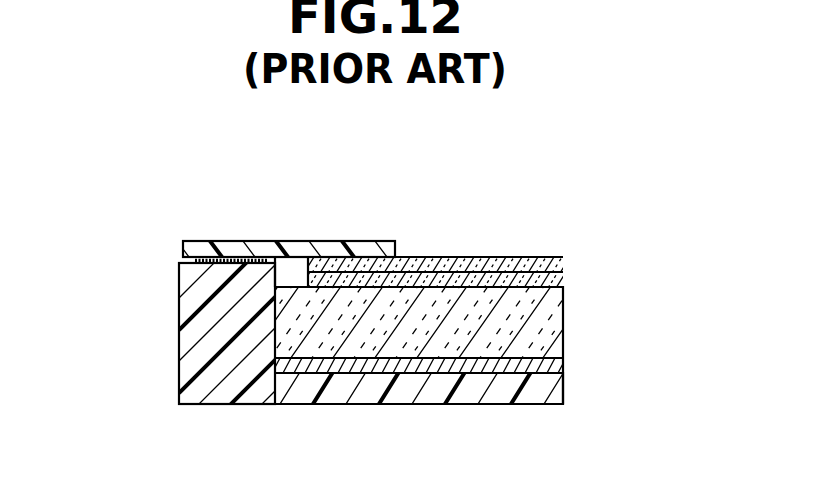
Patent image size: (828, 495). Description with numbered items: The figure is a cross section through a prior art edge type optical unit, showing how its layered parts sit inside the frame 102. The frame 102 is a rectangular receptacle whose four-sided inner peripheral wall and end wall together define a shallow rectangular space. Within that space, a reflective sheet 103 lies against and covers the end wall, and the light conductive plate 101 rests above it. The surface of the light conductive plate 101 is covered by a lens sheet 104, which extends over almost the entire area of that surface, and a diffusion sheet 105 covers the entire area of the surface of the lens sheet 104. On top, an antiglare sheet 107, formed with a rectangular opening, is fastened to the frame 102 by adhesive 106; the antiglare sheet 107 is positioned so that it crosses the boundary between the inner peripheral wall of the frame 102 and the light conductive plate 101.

The light conductive plate 101 is at (552, 328).
The frame 102 is at (205, 338).
The reflective sheet 103 is at (423, 363).
The lens sheet 104 is at (523, 273).
The diffusion sheet 105 is at (438, 263).
The adhesive 106 is at (231, 258).
The antiglare sheet 107 is at (333, 248).